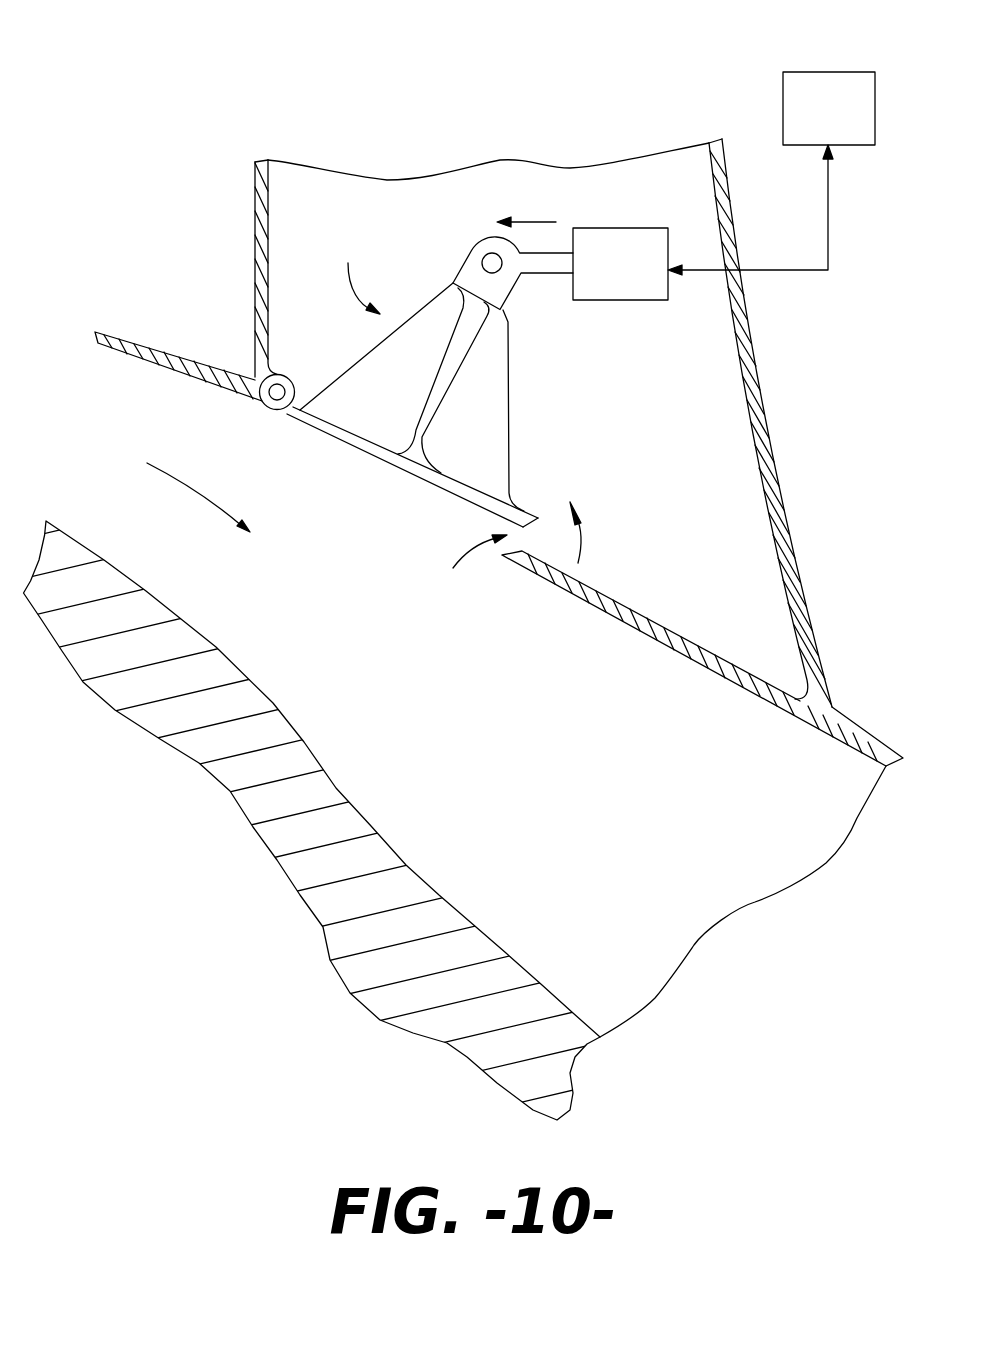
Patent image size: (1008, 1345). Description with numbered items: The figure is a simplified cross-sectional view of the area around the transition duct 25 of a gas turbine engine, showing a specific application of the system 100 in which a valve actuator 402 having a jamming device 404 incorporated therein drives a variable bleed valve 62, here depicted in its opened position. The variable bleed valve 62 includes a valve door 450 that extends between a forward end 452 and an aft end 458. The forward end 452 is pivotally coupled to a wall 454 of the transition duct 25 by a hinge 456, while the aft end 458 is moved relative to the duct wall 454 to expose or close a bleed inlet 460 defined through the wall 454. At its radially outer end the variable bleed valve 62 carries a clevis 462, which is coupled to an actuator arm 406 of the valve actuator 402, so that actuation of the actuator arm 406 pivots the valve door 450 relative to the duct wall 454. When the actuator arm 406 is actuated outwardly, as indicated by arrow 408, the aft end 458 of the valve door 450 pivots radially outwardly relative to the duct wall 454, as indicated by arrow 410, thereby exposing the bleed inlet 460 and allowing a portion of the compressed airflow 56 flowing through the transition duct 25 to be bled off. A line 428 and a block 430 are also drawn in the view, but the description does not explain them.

The system 100 is at (334, 97).
The transition duct 25 is at (452, 734).
The compressed airflow 56 is at (177, 482).
The variable bleed valve 62 is at (358, 272).
The valve actuator 402 is at (686, 254).
The jamming device 404 is at (623, 287).
The actuator arm 406 is at (542, 262).
The arrow 408 is at (530, 220).
The arrow 410 is at (581, 543).
The control signal line 428 is at (782, 273).
The controller 430 is at (805, 119).
The valve door 450 is at (440, 405).
The forward end 452 is at (293, 413).
The wall 454 is at (147, 350).
The hinge 456 is at (293, 378).
The aft end 458 is at (528, 518).
The bleed inlet 460 is at (461, 570).
The clevis 462 is at (468, 249).